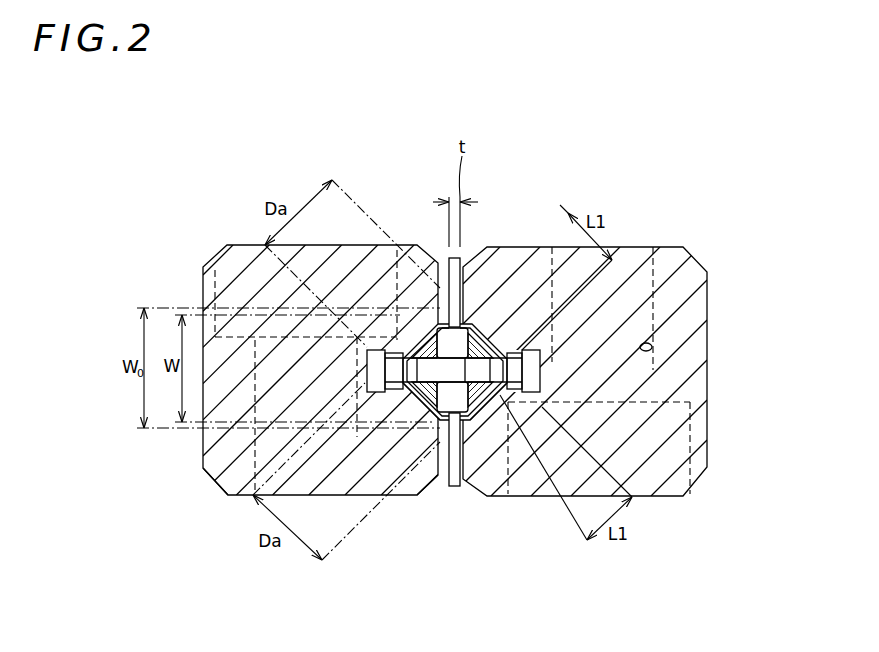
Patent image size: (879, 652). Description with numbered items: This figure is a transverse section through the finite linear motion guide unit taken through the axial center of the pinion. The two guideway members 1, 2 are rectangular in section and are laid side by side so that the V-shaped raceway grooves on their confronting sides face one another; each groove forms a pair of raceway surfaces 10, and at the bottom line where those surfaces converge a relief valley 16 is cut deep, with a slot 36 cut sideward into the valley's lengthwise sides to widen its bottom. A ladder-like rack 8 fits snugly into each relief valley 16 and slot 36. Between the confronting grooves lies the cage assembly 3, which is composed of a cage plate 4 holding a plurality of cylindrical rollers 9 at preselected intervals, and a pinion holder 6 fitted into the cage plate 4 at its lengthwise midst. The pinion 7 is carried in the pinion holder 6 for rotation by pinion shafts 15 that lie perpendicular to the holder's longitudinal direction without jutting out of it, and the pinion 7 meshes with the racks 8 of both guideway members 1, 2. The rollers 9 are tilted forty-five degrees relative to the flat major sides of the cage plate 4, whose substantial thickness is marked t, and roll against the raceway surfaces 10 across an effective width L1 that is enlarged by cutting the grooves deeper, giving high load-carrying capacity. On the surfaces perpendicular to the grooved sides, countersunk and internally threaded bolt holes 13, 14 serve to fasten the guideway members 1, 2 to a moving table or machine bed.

The guideway member 1 is at (232, 276).
The guideway member 2 is at (683, 268).
The cage assembly 3 is at (425, 497).
The cage plate 4 is at (451, 488).
The pinion holder 6 is at (488, 333).
The pinion 7 is at (406, 352).
The rack 8 is at (542, 388).
The cylindrical roller 9 is at (424, 346).
The raceway surface 10 is at (495, 343).
The bolt hole 13 is at (203, 470).
The bolt hole 14 is at (652, 343).
The pinion shaft 15 is at (449, 262).
The relief valley 16 is at (371, 350).
The slot 36 is at (522, 352).